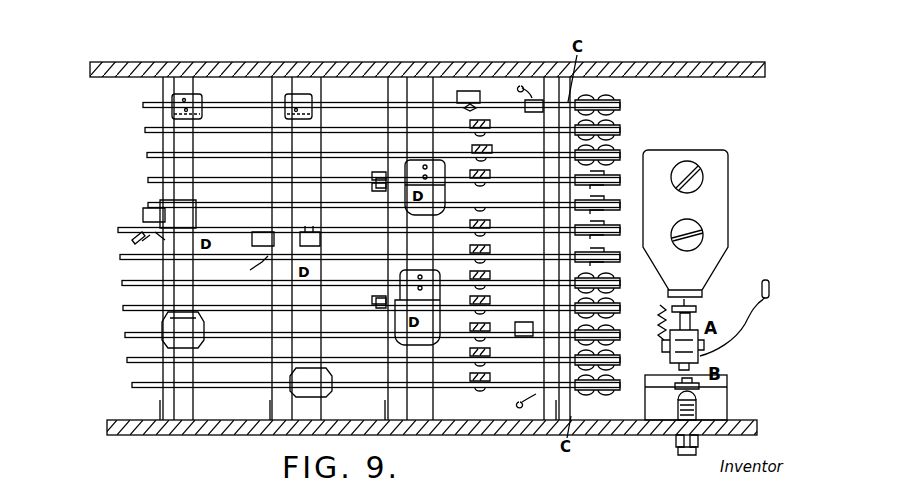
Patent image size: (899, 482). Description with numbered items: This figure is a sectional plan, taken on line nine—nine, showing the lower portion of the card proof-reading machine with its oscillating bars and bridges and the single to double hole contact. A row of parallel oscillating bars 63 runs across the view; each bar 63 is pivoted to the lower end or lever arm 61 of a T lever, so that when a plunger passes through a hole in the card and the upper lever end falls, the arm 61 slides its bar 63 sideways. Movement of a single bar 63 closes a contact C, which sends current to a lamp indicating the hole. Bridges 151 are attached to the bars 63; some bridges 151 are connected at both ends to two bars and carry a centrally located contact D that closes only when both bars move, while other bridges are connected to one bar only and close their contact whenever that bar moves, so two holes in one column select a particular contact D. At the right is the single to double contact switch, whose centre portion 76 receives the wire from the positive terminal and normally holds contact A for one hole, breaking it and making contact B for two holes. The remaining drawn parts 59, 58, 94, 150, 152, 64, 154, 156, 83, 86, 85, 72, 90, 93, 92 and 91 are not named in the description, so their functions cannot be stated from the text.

The upper frame bar 59 is at (735, 78).
The lower frame bar 58 is at (752, 424).
The bridge 151 is at (196, 172).
The post foot 94 is at (166, 405).
The oscillating bar 63 is at (148, 178).
The rod coupling 150 is at (624, 162).
The clamp block 152 is at (296, 110).
The block 64 is at (488, 156).
The lever arm 61 is at (488, 181).
The clamp 154 is at (530, 98).
The clamp 156 is at (378, 186).
The plate 83 is at (722, 210).
The screw 86 is at (697, 182).
The screw 85 is at (702, 191).
The spring 72 is at (660, 309).
The centre portion of single to double contact switch 76 is at (722, 353).
The housing 90 is at (722, 406).
The valve seat 93 is at (697, 399).
The fitting 92 is at (674, 444).
The nut 91 is at (697, 452).